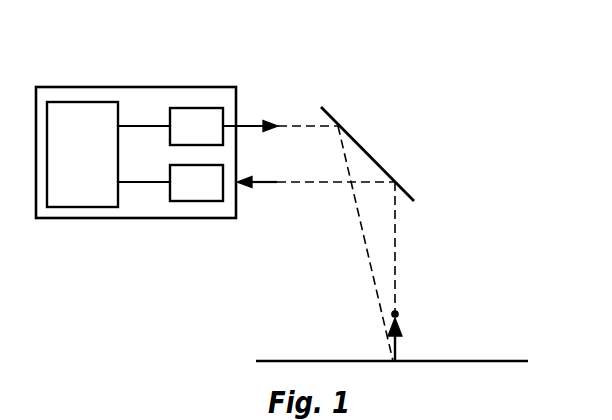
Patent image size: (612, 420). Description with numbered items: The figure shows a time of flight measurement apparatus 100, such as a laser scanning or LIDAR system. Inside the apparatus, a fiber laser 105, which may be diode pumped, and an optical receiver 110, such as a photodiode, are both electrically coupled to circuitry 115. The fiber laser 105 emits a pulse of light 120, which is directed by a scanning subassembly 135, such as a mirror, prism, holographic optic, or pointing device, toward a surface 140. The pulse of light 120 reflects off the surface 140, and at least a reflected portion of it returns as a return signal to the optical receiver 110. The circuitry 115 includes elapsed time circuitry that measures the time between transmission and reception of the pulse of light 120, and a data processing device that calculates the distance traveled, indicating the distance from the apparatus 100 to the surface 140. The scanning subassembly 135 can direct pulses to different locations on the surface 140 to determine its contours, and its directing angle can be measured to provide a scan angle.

The time of flight measurement apparatus 100 is at (154, 87).
The fiber laser 105 is at (197, 108).
The optical receiver 110 is at (197, 201).
The circuitry 115 is at (98, 162).
The pulse of light 120 is at (249, 124).
The scanning subassembly 135 is at (373, 158).
The surface 140 is at (494, 360).